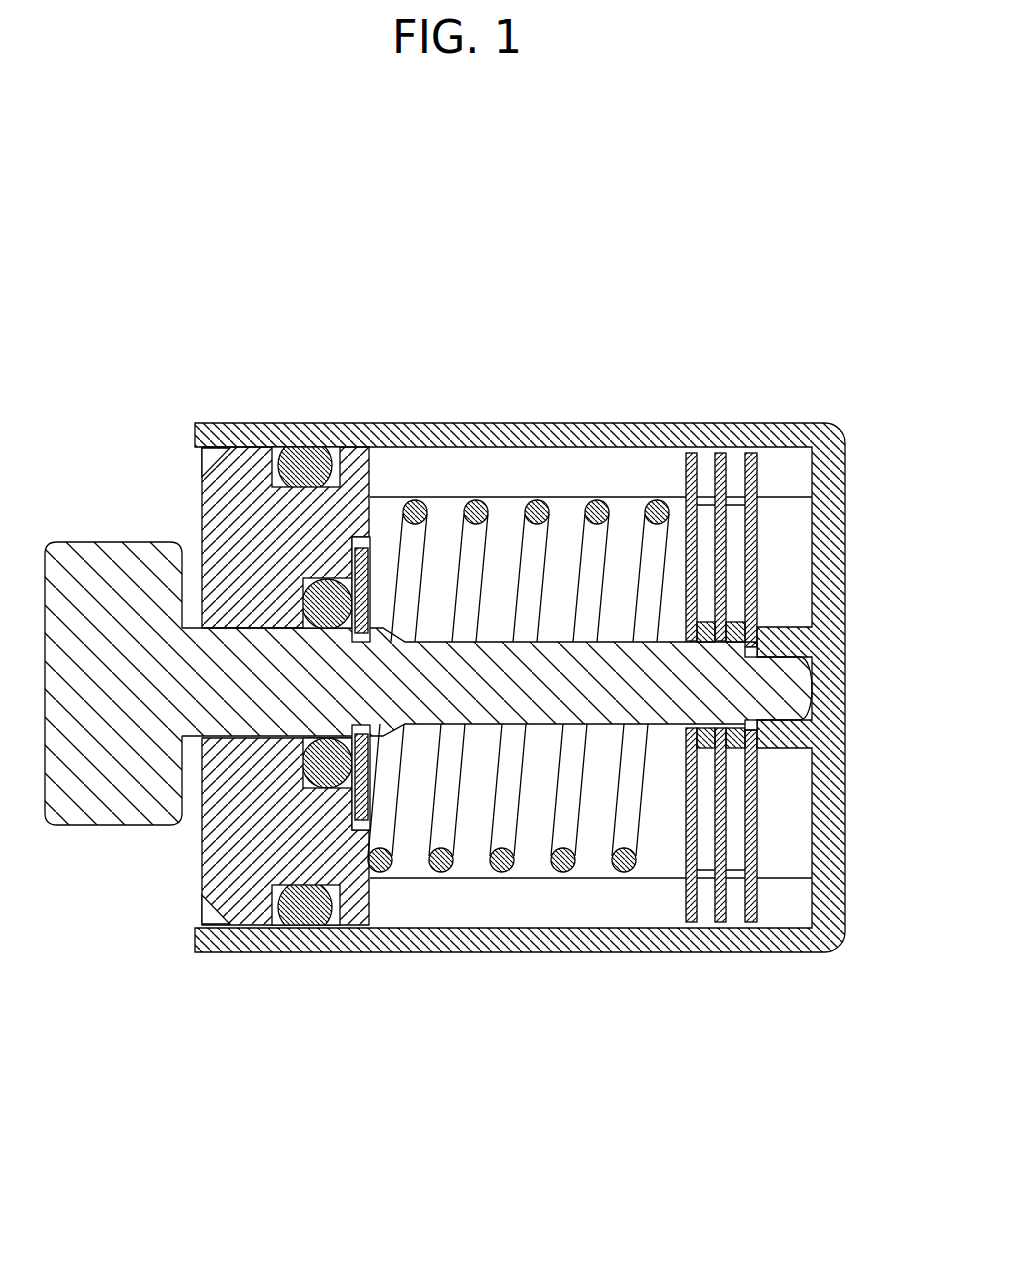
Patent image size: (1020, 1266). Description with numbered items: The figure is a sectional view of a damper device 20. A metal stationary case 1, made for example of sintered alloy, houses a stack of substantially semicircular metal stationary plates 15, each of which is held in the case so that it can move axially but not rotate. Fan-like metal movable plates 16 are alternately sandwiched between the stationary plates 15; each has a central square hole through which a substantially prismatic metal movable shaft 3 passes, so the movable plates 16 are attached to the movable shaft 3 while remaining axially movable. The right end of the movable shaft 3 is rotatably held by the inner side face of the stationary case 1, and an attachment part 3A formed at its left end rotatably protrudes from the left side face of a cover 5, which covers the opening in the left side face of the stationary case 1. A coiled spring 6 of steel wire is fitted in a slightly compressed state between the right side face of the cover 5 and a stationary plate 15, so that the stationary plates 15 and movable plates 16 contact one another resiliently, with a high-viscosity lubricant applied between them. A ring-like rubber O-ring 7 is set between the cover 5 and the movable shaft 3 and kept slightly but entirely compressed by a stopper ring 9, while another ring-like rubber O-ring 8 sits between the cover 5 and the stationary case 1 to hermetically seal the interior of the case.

The stationary case 1 is at (826, 425).
The movable shaft 3 is at (440, 677).
The attachment part 3A is at (103, 567).
The cover 5 is at (232, 485).
The coiled spring 6 is at (540, 498).
The O-ring 7 is at (322, 778).
The O-ring 8 is at (304, 447).
The stopper ring 9 is at (371, 835).
The stationary plates 15 is at (720, 453).
The movable plates 16 is at (722, 922).
The damper device 20 is at (858, 930).